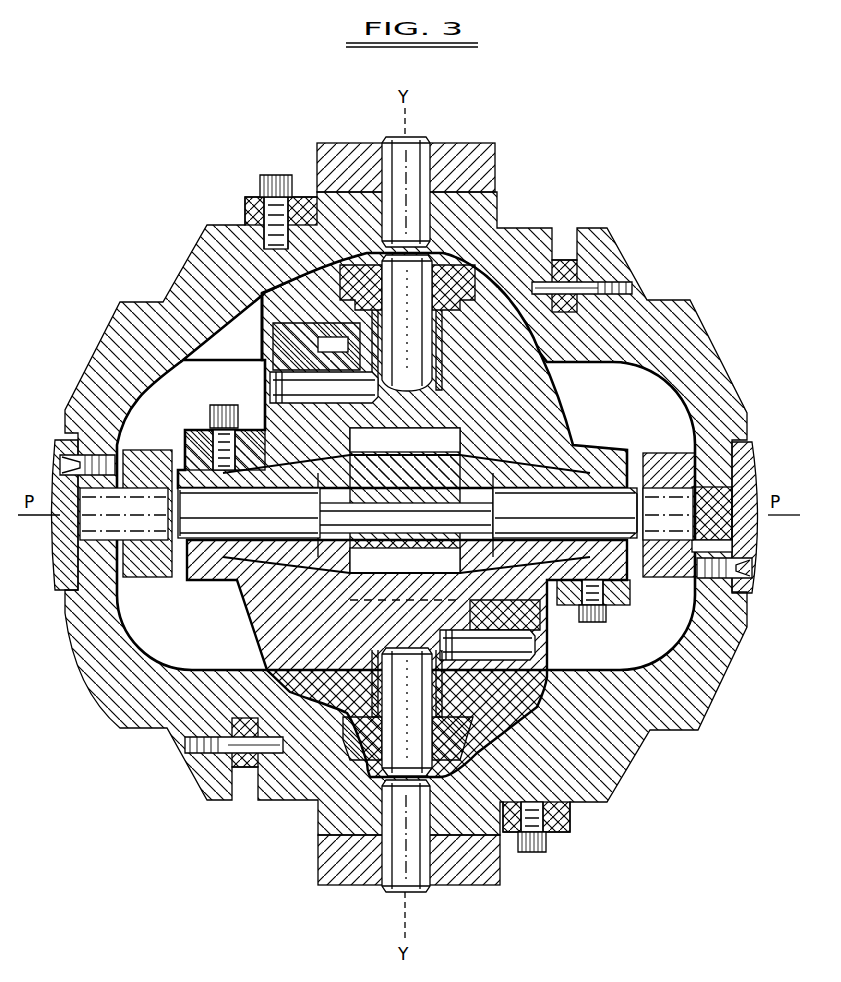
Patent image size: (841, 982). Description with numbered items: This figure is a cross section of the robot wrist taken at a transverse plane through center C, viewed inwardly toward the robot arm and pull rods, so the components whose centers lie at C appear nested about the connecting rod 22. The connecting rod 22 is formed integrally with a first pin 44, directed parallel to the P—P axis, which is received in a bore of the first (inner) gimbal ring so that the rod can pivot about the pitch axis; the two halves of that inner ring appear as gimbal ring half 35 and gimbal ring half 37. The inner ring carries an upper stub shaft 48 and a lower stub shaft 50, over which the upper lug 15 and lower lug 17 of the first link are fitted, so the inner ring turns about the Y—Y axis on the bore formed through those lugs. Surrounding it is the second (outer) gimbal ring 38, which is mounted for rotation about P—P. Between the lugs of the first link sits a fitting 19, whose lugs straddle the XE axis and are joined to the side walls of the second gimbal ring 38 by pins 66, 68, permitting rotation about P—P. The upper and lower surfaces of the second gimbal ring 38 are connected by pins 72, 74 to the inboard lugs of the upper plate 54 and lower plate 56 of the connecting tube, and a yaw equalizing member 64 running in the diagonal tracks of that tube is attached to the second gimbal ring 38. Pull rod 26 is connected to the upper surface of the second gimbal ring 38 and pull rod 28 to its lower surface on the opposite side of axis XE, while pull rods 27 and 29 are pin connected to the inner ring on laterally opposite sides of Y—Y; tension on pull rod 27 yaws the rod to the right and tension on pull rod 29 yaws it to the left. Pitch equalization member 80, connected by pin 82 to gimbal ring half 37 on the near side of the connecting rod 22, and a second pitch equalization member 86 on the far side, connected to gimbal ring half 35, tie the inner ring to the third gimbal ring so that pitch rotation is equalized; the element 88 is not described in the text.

The lug 15 is at (344, 289).
The lug 17 is at (466, 748).
The fitting 19 is at (143, 580).
The connecting rod 22 is at (406, 514).
The pull rod 26 is at (565, 262).
The pull rod 27 is at (190, 425).
The pull rod 28 is at (248, 770).
The pull rod 29 is at (630, 600).
The gimbal ring half 35 is at (566, 405).
The gimbal ring half 37 is at (250, 624).
The second gimbal ring 38 is at (107, 322).
The first pin 44 is at (386, 514).
The upper stub shaft 48 is at (385, 305).
The lower stub shaft 50 is at (470, 732).
The upper plate 54 is at (470, 178).
The lower plate 56 is at (357, 885).
The yaw equalizing member 64 is at (247, 207).
The pin 66 is at (575, 829).
The pin 68 is at (752, 540).
The pin 72 is at (417, 148).
The pin 74 is at (427, 892).
The pitch equalization member 80 is at (322, 352).
The pin 82 is at (268, 383).
The second pitch equalization member 86 is at (548, 622).
The pin 88 is at (548, 648).